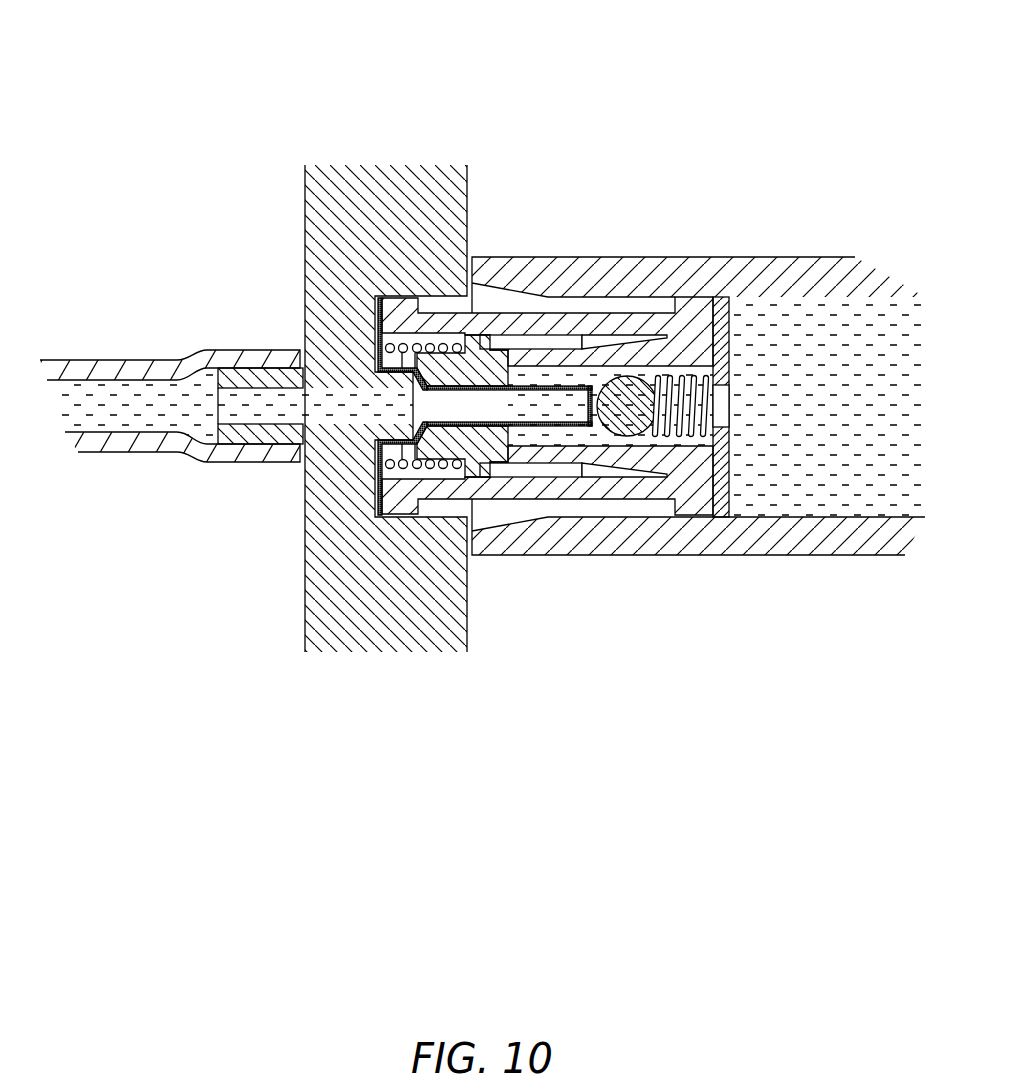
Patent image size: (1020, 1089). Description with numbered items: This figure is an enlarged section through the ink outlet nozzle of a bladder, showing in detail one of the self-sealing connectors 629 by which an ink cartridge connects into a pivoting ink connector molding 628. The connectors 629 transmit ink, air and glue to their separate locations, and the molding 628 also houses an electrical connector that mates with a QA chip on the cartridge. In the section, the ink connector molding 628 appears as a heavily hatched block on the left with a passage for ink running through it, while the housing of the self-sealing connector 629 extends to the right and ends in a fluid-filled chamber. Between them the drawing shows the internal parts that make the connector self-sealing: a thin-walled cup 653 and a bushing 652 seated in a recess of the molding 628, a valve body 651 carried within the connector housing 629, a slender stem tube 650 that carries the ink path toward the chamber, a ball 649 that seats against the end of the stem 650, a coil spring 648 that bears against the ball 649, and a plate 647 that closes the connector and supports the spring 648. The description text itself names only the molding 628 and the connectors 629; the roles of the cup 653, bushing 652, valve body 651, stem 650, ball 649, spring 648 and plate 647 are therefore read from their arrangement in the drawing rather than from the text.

The pivoting ink connector molding 628 is at (390, 195).
The self-sealing connectors 629 is at (513, 123).
The plate 647 is at (720, 503).
The spring 648 is at (665, 430).
The ball 649 is at (623, 393).
The stem tube 650 is at (543, 420).
The valve body 651 is at (493, 490).
The bushing 652 is at (442, 440).
The cup 653 is at (427, 473).